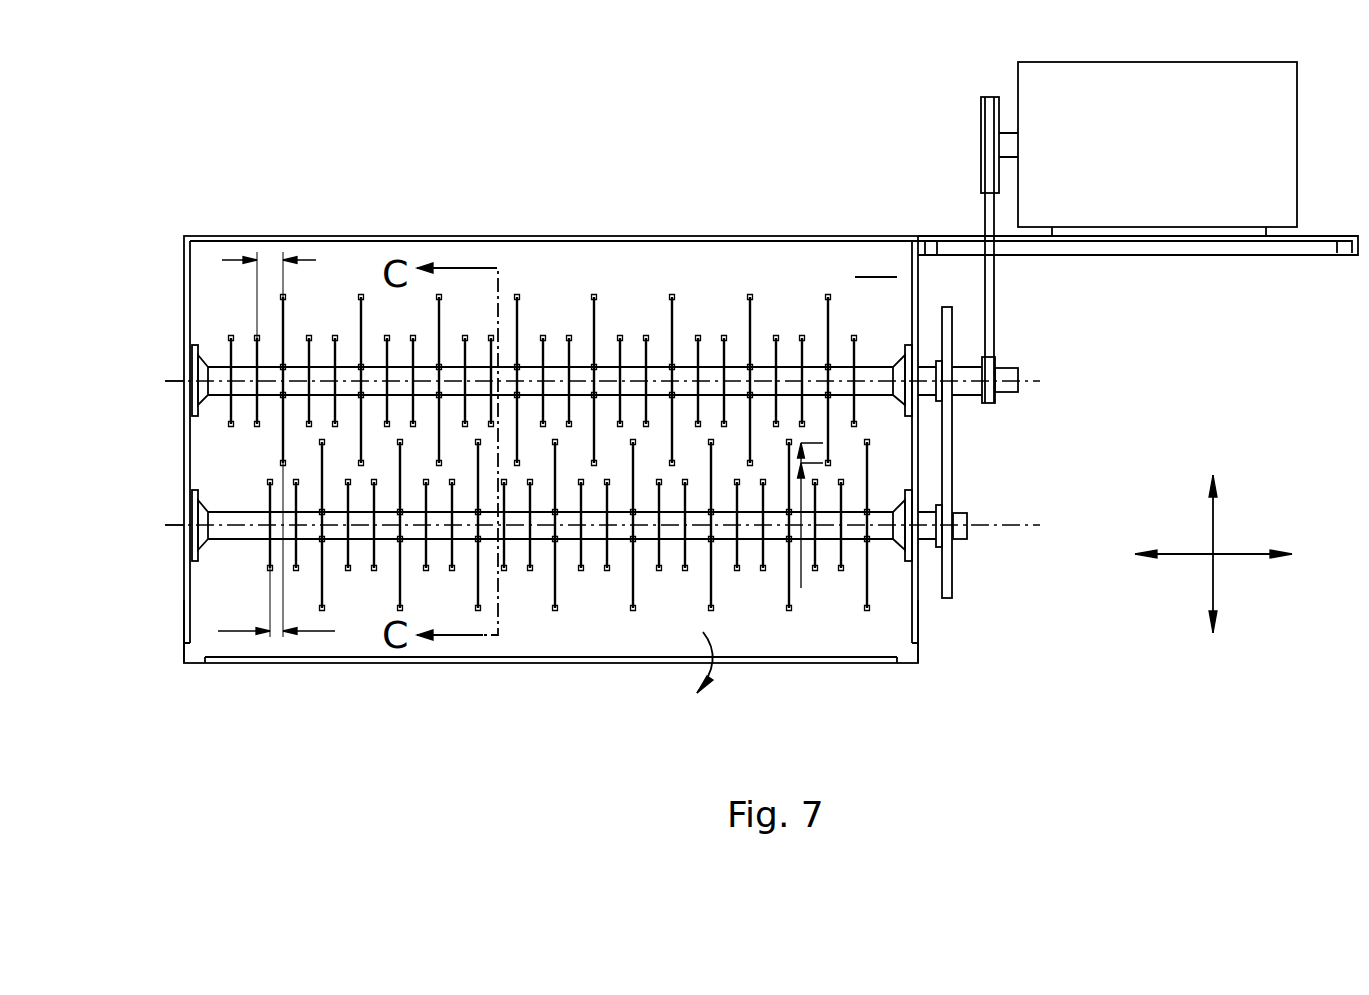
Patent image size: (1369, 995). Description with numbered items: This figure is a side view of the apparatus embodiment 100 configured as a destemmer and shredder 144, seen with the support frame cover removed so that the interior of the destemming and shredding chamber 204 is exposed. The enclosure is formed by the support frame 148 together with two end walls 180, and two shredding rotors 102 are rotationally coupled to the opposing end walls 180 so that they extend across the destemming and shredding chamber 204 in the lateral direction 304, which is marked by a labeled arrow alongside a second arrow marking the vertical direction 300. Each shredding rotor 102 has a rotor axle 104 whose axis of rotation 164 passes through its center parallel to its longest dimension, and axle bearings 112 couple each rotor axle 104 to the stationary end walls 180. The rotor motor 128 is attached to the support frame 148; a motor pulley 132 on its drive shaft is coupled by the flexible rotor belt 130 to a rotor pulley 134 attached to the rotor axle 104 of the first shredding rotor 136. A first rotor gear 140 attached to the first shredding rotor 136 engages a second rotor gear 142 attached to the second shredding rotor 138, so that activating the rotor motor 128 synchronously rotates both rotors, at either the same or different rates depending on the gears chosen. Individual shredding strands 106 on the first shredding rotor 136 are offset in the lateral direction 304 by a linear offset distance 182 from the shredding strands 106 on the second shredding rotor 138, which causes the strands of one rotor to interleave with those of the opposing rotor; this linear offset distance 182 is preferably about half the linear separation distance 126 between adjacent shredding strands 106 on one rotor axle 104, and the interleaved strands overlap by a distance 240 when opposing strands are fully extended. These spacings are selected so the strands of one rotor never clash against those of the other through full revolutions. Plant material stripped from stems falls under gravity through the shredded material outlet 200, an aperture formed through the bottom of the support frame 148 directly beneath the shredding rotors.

The apparatus embodiment 100 is at (553, 148).
The shredding rotor 102 is at (575, 458).
The rotor axle 104 is at (1018, 383).
The shredding strands 106 is at (257, 347).
The axle bearings 112 is at (908, 347).
The linear separation distance 126 is at (293, 293).
The rotor motor 128 is at (1297, 163).
The rotor belt 130 is at (997, 272).
The motor pulley 132 is at (980, 177).
The rotor pulley 134 is at (997, 356).
The first shredding rotor 136 is at (565, 320).
The second shredding rotor 138 is at (528, 588).
The first rotor gear 140 is at (953, 420).
The second rotor gear 142 is at (952, 570).
The destemmer and shredder 144 is at (723, 197).
The support frame 148 is at (887, 235).
The axis of rotation 164 is at (178, 383).
The end walls 180 is at (184, 615).
The linear offset distance 182 is at (313, 632).
The shredded material outlet 200 is at (688, 651).
The destemming and shredding chamber 204 is at (878, 265).
The overlap distance 240 is at (803, 575).
The vertical direction arrow 300 is at (1215, 517).
The lateral direction arrow 304 is at (1228, 557).